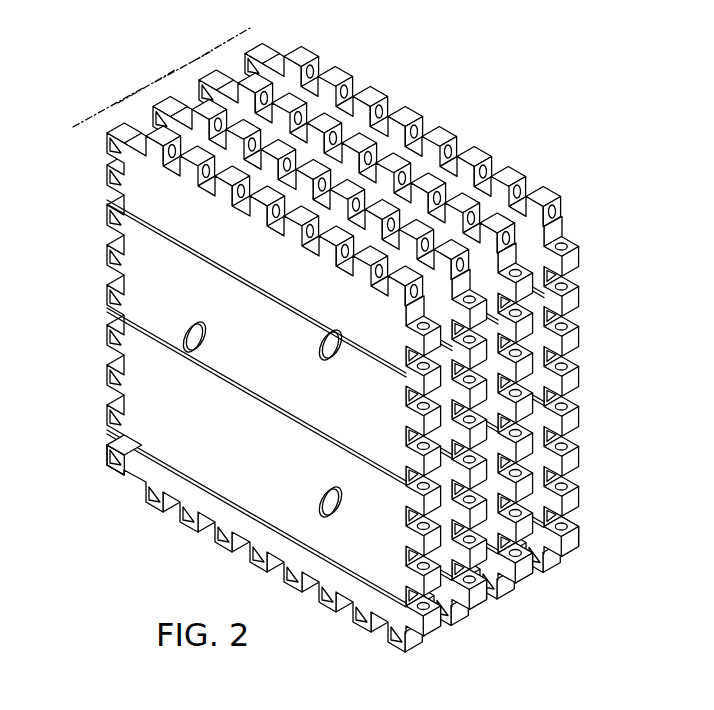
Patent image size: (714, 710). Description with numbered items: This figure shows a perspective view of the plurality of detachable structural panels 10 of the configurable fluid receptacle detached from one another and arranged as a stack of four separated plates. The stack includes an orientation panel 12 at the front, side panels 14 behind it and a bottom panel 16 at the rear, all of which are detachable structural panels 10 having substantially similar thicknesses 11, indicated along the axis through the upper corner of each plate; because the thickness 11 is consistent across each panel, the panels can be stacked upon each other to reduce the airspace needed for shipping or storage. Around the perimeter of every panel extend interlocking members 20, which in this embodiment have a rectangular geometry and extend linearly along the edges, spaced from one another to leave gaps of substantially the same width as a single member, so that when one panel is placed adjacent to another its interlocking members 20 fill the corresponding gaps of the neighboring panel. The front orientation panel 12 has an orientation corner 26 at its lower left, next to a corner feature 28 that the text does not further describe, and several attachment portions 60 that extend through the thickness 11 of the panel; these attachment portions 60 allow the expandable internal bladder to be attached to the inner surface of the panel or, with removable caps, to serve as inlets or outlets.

The detachable structural panels 10 is at (425, 308).
The thickness 11 is at (91, 120).
The orientation panel 12 is at (419, 634).
The side panels 14 is at (487, 612).
The bottom panels 16 is at (580, 557).
The interlocking members 20 is at (343, 352).
The orientation corner 26 is at (73, 500).
The tab 28 is at (107, 473).
The attachment portions 60 is at (200, 324).